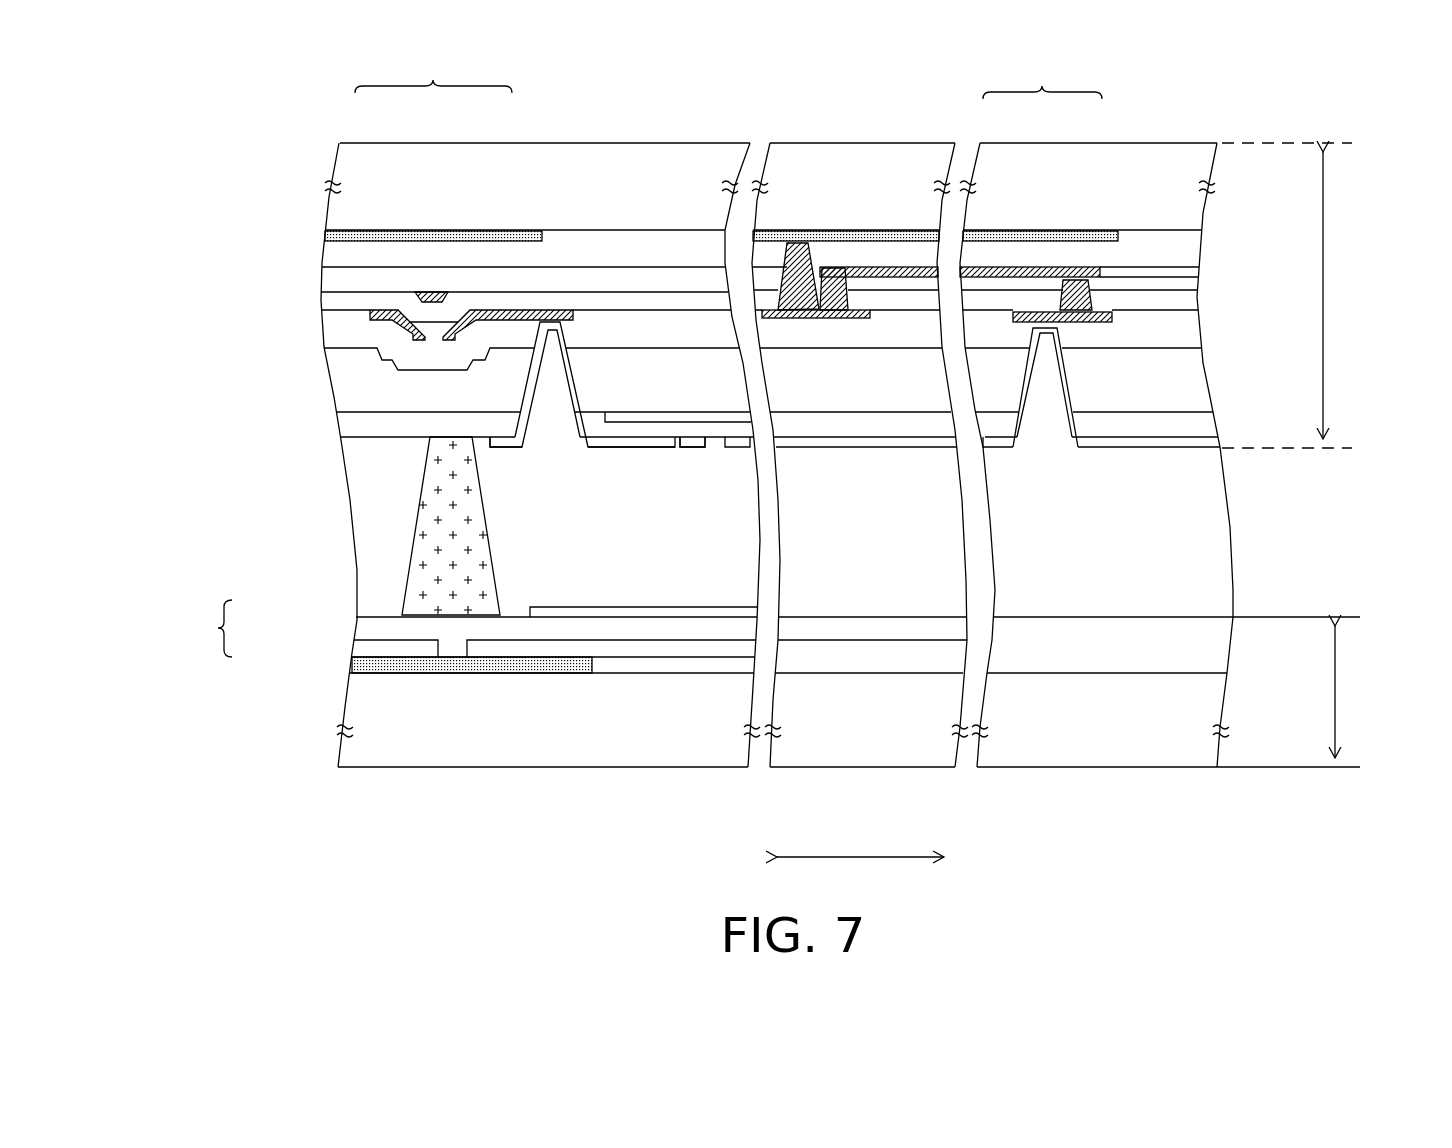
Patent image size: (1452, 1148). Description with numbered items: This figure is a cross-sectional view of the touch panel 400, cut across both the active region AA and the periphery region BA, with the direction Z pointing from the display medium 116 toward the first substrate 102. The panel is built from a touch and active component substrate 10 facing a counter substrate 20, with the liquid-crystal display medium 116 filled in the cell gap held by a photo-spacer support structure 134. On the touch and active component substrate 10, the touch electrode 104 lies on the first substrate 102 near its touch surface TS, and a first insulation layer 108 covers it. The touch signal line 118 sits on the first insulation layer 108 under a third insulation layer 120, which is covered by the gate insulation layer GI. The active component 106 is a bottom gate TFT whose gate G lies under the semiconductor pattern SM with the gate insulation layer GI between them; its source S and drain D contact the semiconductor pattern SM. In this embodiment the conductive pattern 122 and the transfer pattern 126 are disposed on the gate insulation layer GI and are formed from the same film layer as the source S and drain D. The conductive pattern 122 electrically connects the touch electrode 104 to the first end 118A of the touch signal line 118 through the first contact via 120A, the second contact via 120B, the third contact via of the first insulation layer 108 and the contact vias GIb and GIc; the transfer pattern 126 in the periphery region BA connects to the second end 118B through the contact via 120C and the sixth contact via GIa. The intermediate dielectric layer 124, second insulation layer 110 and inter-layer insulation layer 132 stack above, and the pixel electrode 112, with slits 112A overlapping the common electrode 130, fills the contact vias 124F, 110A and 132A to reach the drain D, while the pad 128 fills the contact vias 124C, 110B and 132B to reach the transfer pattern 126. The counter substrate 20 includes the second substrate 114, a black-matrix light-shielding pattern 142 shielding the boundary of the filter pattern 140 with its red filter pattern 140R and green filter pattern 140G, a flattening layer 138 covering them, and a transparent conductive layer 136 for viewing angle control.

The first substrate 102 is at (337, 160).
The touch electrode 104 is at (338, 215).
The active component 106 is at (433, 71).
The first insulation layer 108 is at (325, 234).
The second insulation layer 110 is at (340, 388).
The contact via 110A is at (533, 380).
The contact via 110B is at (1029, 380).
The pixel electrode 112 is at (590, 445).
The slit 112A is at (662, 448).
The second substrate 114 is at (1217, 698).
The display medium 116 is at (373, 483).
The touch signal line 118 is at (1042, 77).
The first end 118A is at (958, 246).
The second end 118B is at (1088, 276).
The third insulation layer 120 is at (323, 275).
The first contact via 120A is at (838, 282).
The second contact via 120B is at (810, 265).
The contact via 120C is at (1067, 283).
The conductive pattern 122 is at (812, 320).
The intermediate dielectric layer 124 is at (338, 343).
The contact via 124C is at (1037, 332).
The contact via 124F is at (541, 336).
The transfer pattern 126 is at (1112, 317).
The pad 128 is at (1190, 444).
The common electrode 130 is at (606, 420).
The inter-layer insulation layer 132 is at (348, 423).
The contact via 132A is at (515, 450).
The contact via 132B is at (1020, 425).
The support structure 134 is at (414, 545).
The conductive layer 136 is at (519, 429).
The flattening layer 138 is at (1217, 643).
The filter pattern 140 is at (197, 628).
The green filter pattern 140G is at (490, 647).
The red filter pattern 140R is at (362, 647).
The light-shielding pattern 142 is at (355, 670).
The touch and active component substrate 10 is at (1289, 295).
The counter substrate 20 is at (1293, 692).
The touch panel 400 is at (1409, 800).
The source S is at (381, 311).
The semiconductor pattern SM is at (396, 330).
The gate G is at (435, 296).
The drain D is at (488, 318).
The gate insulation layer GI is at (516, 303).
The sixth contact via GIa is at (1067, 303).
The contact via GIb is at (823, 301).
The contact via GIc is at (786, 293).
The touch surface TS is at (1150, 141).
The direction z Z is at (125, 282).
The active region AA is at (346, 857).
The periphery region BA is at (1208, 857).